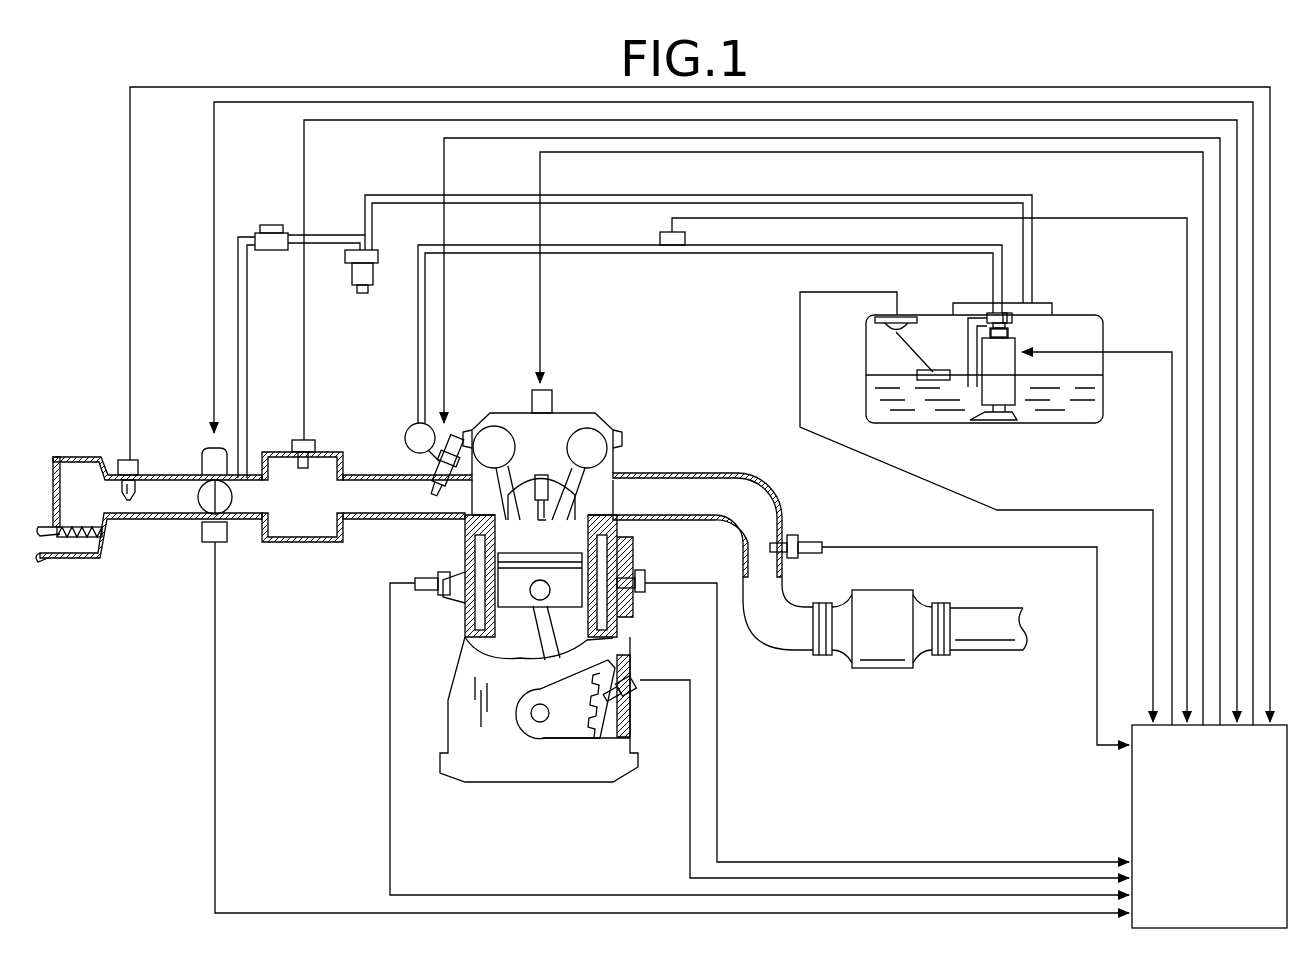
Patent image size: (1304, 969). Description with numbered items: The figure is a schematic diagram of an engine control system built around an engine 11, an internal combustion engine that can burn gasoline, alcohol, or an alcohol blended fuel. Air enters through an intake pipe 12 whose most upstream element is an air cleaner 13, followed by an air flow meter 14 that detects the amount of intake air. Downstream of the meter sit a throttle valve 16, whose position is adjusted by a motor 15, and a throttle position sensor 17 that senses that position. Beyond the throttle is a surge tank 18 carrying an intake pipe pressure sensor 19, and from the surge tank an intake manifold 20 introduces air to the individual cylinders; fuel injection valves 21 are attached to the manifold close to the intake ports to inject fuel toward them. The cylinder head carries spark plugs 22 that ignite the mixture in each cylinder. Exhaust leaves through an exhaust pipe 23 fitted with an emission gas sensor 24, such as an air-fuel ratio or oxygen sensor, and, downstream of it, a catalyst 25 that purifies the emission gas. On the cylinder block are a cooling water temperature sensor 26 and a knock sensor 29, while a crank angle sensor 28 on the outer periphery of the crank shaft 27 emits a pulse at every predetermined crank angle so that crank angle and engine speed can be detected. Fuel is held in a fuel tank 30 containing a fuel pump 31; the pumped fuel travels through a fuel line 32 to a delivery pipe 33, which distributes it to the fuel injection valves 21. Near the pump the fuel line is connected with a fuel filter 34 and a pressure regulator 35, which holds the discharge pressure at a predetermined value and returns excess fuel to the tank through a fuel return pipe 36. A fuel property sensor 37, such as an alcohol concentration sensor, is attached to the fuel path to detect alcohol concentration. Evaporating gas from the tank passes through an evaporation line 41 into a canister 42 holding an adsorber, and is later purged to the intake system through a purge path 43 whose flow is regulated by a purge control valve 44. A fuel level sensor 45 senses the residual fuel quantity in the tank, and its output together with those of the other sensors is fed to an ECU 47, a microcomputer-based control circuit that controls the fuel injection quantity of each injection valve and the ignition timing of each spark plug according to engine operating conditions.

The engine 11 is at (593, 414).
The intake pipe 12 is at (165, 473).
The air cleaner 13 is at (62, 560).
The air flow meter 14 is at (122, 458).
The motor 15 is at (208, 446).
The throttle valve 16 is at (205, 500).
The throttle position sensor 17 is at (225, 545).
The surge tank 18 is at (310, 545).
The intake pipe pressure sensor 19 is at (298, 438).
The intake manifold 20 is at (352, 520).
The fuel injection valve 21 is at (455, 433).
The spark plug 22 is at (548, 400).
The exhaust pipe 23 is at (712, 471).
The emission gas sensor 24 is at (796, 535).
The catalyst 25 is at (880, 590).
The cooling water temperature sensor 26 is at (442, 600).
The crank shaft 27 is at (540, 723).
The crank angle sensor 28 is at (638, 678).
The knock sensor 29 is at (648, 575).
The fuel tank 30 is at (1104, 368).
The fuel pump 31 is at (1017, 388).
The fuel line 32 is at (737, 255).
The delivery pipe 33 is at (405, 430).
The fuel filter 34 is at (1010, 333).
The pressure regulator 35 is at (1013, 318).
The fuel return pipe 36 is at (968, 350).
The fuel property sensor 37 is at (660, 238).
The evaporation line 41 is at (785, 190).
The canister 42 is at (372, 287).
The purge path 43 is at (336, 235).
The purge control valve 44 is at (272, 224).
The fuel level sensor 45 is at (883, 330).
The ECU 47 is at (1130, 795).